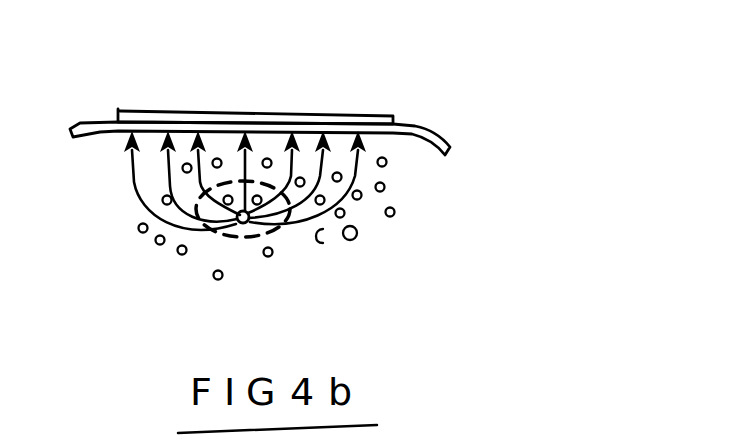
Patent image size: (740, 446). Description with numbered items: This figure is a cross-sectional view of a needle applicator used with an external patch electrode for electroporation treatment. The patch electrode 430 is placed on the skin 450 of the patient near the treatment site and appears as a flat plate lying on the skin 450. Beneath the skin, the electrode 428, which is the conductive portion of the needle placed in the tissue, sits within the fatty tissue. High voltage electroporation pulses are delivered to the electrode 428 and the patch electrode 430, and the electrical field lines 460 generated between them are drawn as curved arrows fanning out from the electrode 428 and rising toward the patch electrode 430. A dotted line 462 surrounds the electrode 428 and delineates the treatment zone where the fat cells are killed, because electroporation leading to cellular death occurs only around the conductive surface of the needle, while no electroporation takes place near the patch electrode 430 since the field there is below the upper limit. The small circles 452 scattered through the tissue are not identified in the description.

The substrate plate 430 is at (327, 115).
The carrier plate 450 is at (456, 142).
The field lines 460 is at (170, 167).
The dashed boundary region 462 is at (217, 233).
The point source 428 is at (243, 224).
The particles 452 is at (357, 212).